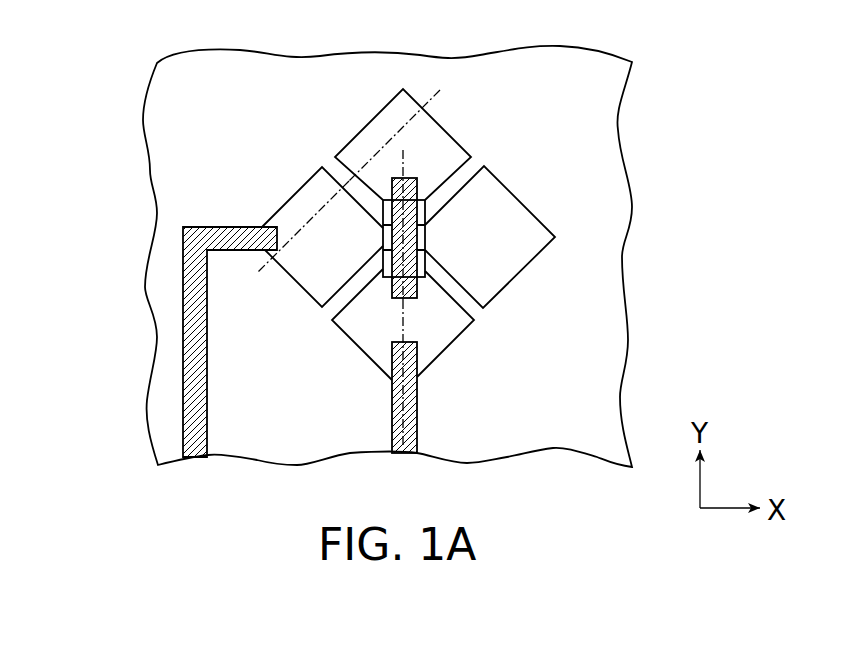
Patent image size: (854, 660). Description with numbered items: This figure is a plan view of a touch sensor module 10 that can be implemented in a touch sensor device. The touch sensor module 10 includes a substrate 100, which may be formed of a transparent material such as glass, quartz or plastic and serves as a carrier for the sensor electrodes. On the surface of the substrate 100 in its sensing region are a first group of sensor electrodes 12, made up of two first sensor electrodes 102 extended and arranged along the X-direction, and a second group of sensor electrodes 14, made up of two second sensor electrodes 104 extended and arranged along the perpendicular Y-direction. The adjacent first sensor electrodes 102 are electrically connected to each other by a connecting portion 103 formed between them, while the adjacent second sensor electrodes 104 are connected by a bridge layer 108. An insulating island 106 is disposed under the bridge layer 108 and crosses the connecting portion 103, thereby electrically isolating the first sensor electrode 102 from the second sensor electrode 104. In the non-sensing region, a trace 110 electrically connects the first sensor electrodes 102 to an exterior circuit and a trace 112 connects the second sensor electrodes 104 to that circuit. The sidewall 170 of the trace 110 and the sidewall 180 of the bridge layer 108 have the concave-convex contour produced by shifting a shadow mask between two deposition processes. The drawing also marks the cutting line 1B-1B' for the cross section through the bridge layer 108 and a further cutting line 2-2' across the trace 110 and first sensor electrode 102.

The touch sensor module 10 is at (668, 79).
The substrate 100 is at (586, 89).
The first group of sensor electrodes 12 is at (547, 216).
The second group of sensor electrodes 14 is at (443, 115).
The first sensor electrode 102 is at (303, 203).
The second sensor electrode 104 is at (375, 130).
The connecting portion 103 is at (383, 237).
The insulating island 106 is at (423, 190).
The bridge layer 108 is at (410, 180).
The trace 110 is at (183, 368).
The trace 112 is at (417, 435).
The sidewall of the trace 170 is at (235, 220).
The sidewall of the bridge layer 180 is at (385, 287).
The section line 2-2' 2 is at (259, 230).
The section line 2- 2' is at (396, 92).
The section line 1B-1B' 1B is at (371, 222).
The section line 1B- 1B' is at (371, 372).